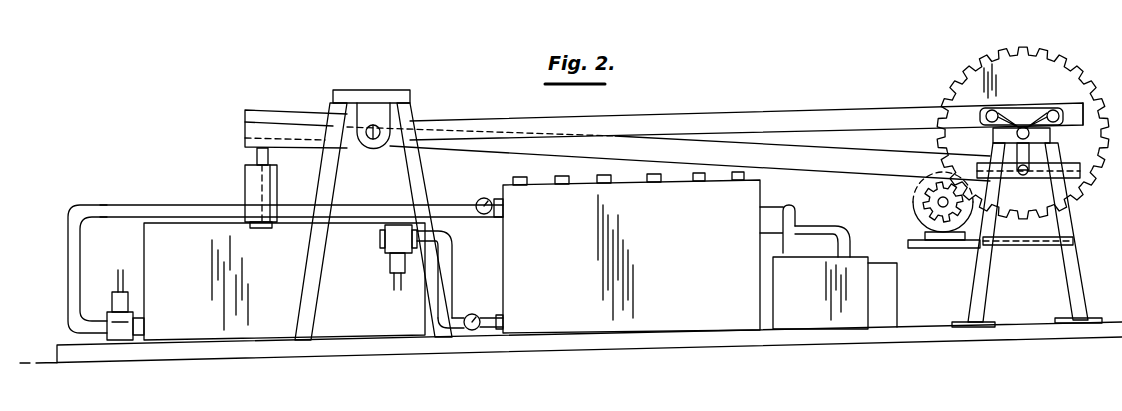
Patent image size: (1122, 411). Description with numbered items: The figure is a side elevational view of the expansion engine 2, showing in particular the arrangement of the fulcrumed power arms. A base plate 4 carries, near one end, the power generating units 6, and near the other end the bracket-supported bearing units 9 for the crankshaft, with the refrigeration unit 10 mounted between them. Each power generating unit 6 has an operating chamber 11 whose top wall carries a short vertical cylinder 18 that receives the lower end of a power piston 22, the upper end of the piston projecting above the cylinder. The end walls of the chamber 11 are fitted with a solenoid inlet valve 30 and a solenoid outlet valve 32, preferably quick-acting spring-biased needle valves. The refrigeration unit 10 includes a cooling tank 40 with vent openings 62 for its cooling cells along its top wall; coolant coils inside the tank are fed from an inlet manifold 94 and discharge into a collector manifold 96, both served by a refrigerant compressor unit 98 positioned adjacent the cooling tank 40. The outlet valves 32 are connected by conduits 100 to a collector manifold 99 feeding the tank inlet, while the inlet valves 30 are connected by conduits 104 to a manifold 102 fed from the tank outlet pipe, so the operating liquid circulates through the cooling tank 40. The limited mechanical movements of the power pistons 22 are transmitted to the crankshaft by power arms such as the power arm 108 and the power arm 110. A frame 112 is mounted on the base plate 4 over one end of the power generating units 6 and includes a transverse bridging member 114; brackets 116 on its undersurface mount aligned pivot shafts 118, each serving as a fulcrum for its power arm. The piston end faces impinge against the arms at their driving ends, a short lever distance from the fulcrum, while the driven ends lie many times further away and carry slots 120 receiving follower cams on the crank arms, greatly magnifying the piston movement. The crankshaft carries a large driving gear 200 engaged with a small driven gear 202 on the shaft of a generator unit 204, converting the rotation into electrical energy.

The expansion engine 2 is at (176, 163).
The base plate 4 is at (191, 353).
The power generating unit 6 is at (140, 197).
The bearing unit 9 is at (1048, 131).
The refrigeration unit 10 is at (775, 100).
The operating chamber 11 is at (152, 258).
The vertical cylinder 18 is at (246, 176).
The power piston 22 is at (269, 156).
The solenoid inlet valve 30 is at (397, 226).
The solenoid outlet valve 32 is at (123, 340).
The cooling tank 40 is at (585, 218).
The vent opening 62 is at (518, 186).
The inlet manifold 94 is at (817, 227).
The collector manifold 96 is at (778, 211).
The refrigerant compressor unit 98 is at (790, 297).
The collector manifold 99 is at (478, 198).
The conduit 100 is at (92, 205).
The manifold 102 is at (471, 313).
The conduit 104 is at (470, 249).
The power arm 108 is at (851, 148).
The power arm 110 is at (700, 113).
The frame 112 is at (416, 103).
The transverse bridging member 114 is at (384, 89).
The bracket 116 is at (362, 149).
The pivot shaft 118 is at (371, 126).
The slot 120 is at (1015, 108).
The large driving gear 200 is at (1052, 50).
The small driven gear 202 is at (944, 234).
The generator unit 204 is at (918, 197).